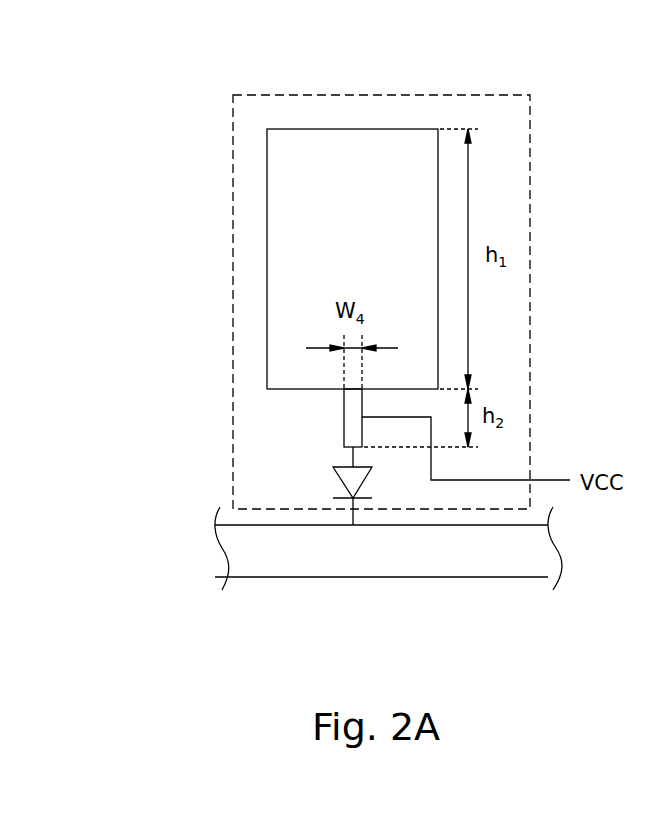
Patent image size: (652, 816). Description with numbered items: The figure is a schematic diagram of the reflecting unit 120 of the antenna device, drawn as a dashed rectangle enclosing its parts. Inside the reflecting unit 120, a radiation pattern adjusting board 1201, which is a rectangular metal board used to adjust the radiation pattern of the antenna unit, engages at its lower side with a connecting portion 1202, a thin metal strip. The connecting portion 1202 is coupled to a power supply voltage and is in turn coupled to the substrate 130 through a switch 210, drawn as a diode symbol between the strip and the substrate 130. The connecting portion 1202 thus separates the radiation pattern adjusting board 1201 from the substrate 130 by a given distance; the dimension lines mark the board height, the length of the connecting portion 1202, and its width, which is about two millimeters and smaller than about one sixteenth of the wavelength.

The reflecting unit 120 is at (233, 95).
The radiation pattern adjusting board 1201 is at (290, 252).
The connecting portion 1202 is at (350, 415).
The switch 210 is at (345, 470).
The substrate 130 is at (240, 555).